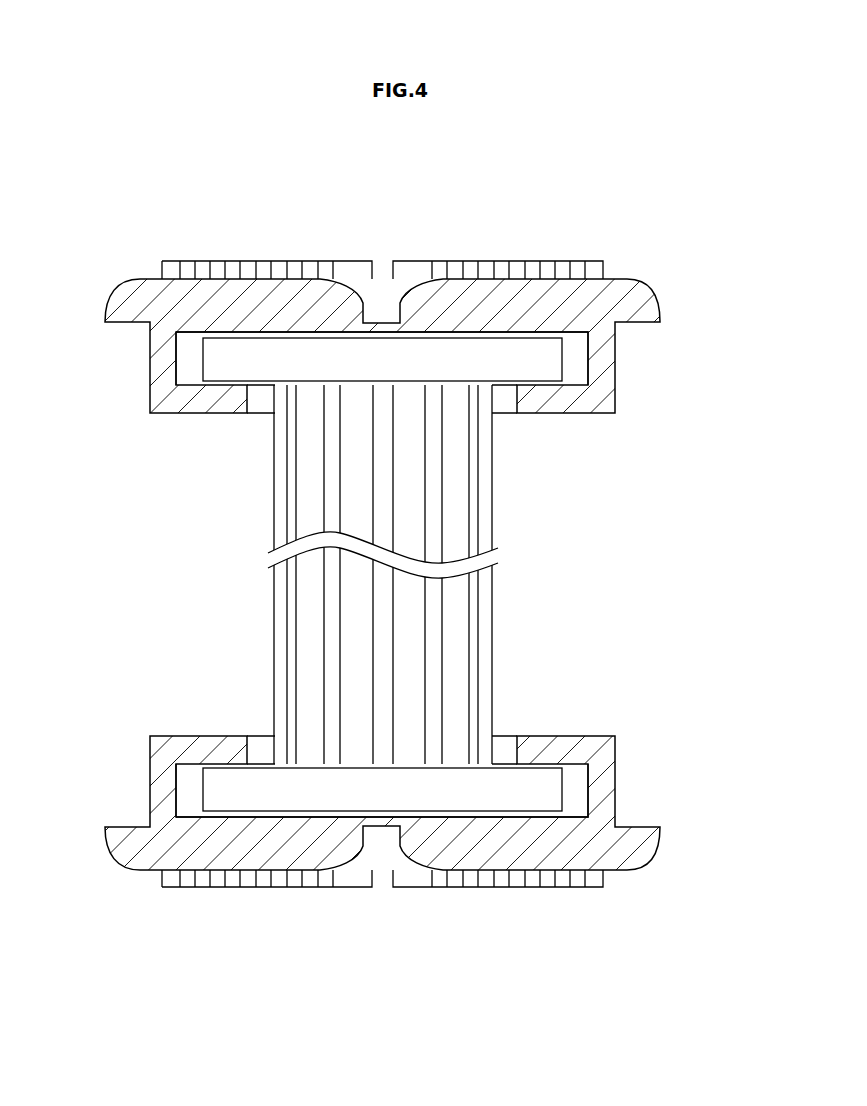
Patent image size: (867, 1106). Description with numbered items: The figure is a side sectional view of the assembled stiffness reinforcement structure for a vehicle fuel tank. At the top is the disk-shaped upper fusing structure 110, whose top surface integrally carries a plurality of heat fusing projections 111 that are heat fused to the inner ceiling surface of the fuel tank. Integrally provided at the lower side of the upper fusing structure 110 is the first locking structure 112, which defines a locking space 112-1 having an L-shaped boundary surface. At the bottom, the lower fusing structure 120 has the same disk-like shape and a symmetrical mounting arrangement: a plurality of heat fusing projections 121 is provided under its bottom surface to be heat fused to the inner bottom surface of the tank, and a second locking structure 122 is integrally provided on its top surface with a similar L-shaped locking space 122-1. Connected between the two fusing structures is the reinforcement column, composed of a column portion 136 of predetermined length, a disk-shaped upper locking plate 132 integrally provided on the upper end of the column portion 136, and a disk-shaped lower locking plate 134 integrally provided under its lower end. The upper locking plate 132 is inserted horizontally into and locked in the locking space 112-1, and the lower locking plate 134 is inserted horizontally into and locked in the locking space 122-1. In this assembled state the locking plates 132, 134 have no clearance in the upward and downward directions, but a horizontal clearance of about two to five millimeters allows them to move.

The upper fusing structure 110 is at (390, 341).
The heat fusing projections 111 is at (532, 268).
The first locking structure 112 is at (600, 362).
The locking space 112-1 is at (576, 374).
The lower fusing structure 120 is at (389, 808).
The heat fusing projections 121 is at (532, 881).
The second locking structure 122 is at (600, 787).
The locking space 122-1 is at (576, 775).
The upper locking plate 132 is at (218, 360).
The lower locking plate 134 is at (218, 789).
The column portion 136 is at (305, 478).